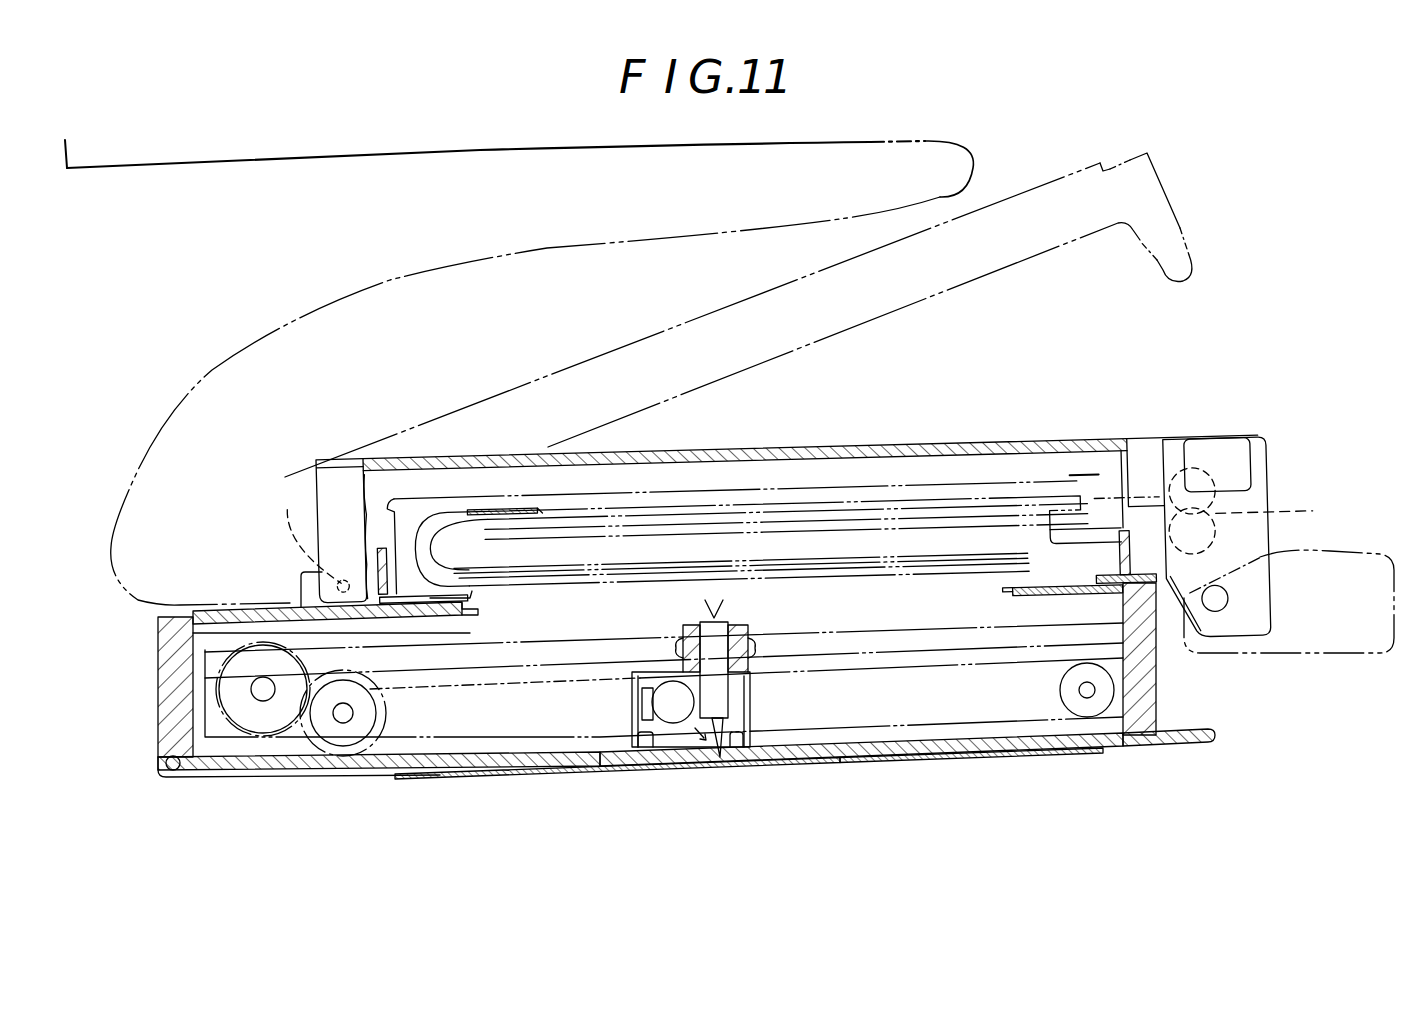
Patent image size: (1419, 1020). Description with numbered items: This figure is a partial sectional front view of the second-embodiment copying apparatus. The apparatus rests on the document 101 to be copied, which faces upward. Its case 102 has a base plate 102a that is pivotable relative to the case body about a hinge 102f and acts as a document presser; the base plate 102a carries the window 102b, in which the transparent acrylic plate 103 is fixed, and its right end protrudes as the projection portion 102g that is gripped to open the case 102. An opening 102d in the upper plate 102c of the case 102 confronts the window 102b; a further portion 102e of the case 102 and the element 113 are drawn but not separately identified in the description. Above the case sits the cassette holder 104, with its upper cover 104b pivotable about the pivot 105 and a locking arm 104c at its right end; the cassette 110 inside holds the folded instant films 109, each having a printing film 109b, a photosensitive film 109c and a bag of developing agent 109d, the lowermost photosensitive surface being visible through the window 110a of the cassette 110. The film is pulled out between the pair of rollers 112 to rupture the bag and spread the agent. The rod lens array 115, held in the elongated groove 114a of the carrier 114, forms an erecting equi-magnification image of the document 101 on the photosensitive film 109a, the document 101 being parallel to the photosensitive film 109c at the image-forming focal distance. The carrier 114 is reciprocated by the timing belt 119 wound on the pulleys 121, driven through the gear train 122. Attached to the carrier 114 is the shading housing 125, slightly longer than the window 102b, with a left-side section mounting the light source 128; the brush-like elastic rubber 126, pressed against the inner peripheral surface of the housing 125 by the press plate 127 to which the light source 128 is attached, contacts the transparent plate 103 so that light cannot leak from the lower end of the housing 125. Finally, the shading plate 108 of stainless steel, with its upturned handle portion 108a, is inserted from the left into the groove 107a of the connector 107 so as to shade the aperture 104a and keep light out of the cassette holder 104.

The document 101 is at (440, 776).
The case 102 is at (178, 687).
The base plate 102a is at (248, 762).
The window 102b is at (500, 765).
The upper plate 102c is at (272, 618).
The opening 102d is at (476, 615).
The hinge support portion 102e is at (303, 573).
The hinge 102f is at (172, 772).
The projection portion 102g is at (1185, 742).
The transparent acrylic plate 103 is at (868, 728).
The cassette holder 104 is at (330, 478).
The aperture 104a is at (468, 600).
The upper cover 104b is at (1024, 177).
The locking arm 104c is at (1262, 441).
The pivot 105 is at (298, 508).
The connector 107 is at (1120, 584).
The groove 107a is at (1078, 588).
The shading plate 108 is at (218, 166).
The handle portion 108a is at (66, 172).
The instant film 109 is at (858, 493).
The photosensitive film 109a is at (1285, 512).
The printing film 109b is at (645, 500).
The photosensitive film 109c is at (965, 575).
The developing agent bag 109d is at (497, 500).
The cassette 110 is at (882, 490).
The cassette window 110a is at (975, 652).
The rollers 112 is at (1187, 452).
The support plate 113 is at (870, 632).
The carrier 114 is at (752, 645).
The elongated groove 114a is at (744, 628).
The rod lens array 115 is at (700, 632).
The timing belt 119 is at (995, 752).
The pulleys 121 is at (345, 735).
The gear train 122 is at (222, 668).
The shading housing 125 is at (633, 715).
The brush-like elastic rubber 126 is at (628, 748).
The press plate 127 is at (650, 742).
The light source 128 is at (673, 706).